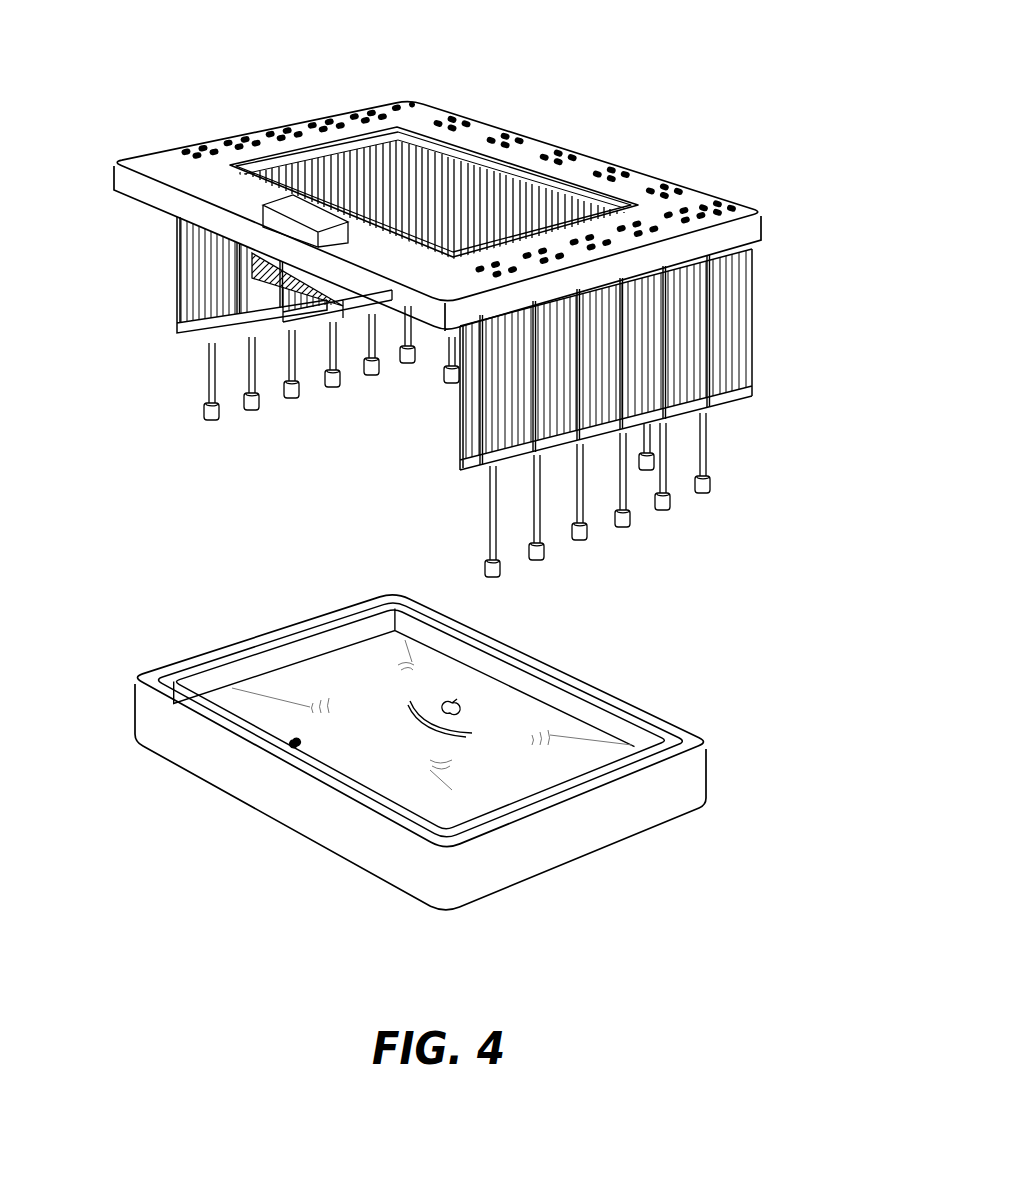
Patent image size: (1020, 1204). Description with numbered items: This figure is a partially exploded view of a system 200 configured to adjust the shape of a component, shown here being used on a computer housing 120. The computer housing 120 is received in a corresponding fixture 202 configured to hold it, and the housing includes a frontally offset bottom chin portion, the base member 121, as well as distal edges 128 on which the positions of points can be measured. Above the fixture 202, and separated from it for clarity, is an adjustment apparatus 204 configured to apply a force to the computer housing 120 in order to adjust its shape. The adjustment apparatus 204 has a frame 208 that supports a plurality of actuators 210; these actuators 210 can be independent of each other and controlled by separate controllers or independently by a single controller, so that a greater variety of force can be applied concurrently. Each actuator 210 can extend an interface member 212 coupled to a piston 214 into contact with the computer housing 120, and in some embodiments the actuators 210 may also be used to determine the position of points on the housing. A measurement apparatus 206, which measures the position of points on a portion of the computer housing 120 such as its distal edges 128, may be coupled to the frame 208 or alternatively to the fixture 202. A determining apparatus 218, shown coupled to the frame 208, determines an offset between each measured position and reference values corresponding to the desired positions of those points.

The system 200 is at (470, 298).
The frame 208 is at (533, 143).
The adjustment apparatus 204 is at (470, 381).
The determining apparatus 218 is at (290, 227).
The measurement apparatus 206 is at (262, 283).
The actuators 210 is at (196, 300).
The pistons 214 is at (210, 388).
The interface members 212 is at (212, 418).
The computer housing 120 is at (380, 780).
The base member 121 is at (370, 783).
The fixture 202 is at (415, 876).
The distal edges 128 is at (585, 770).